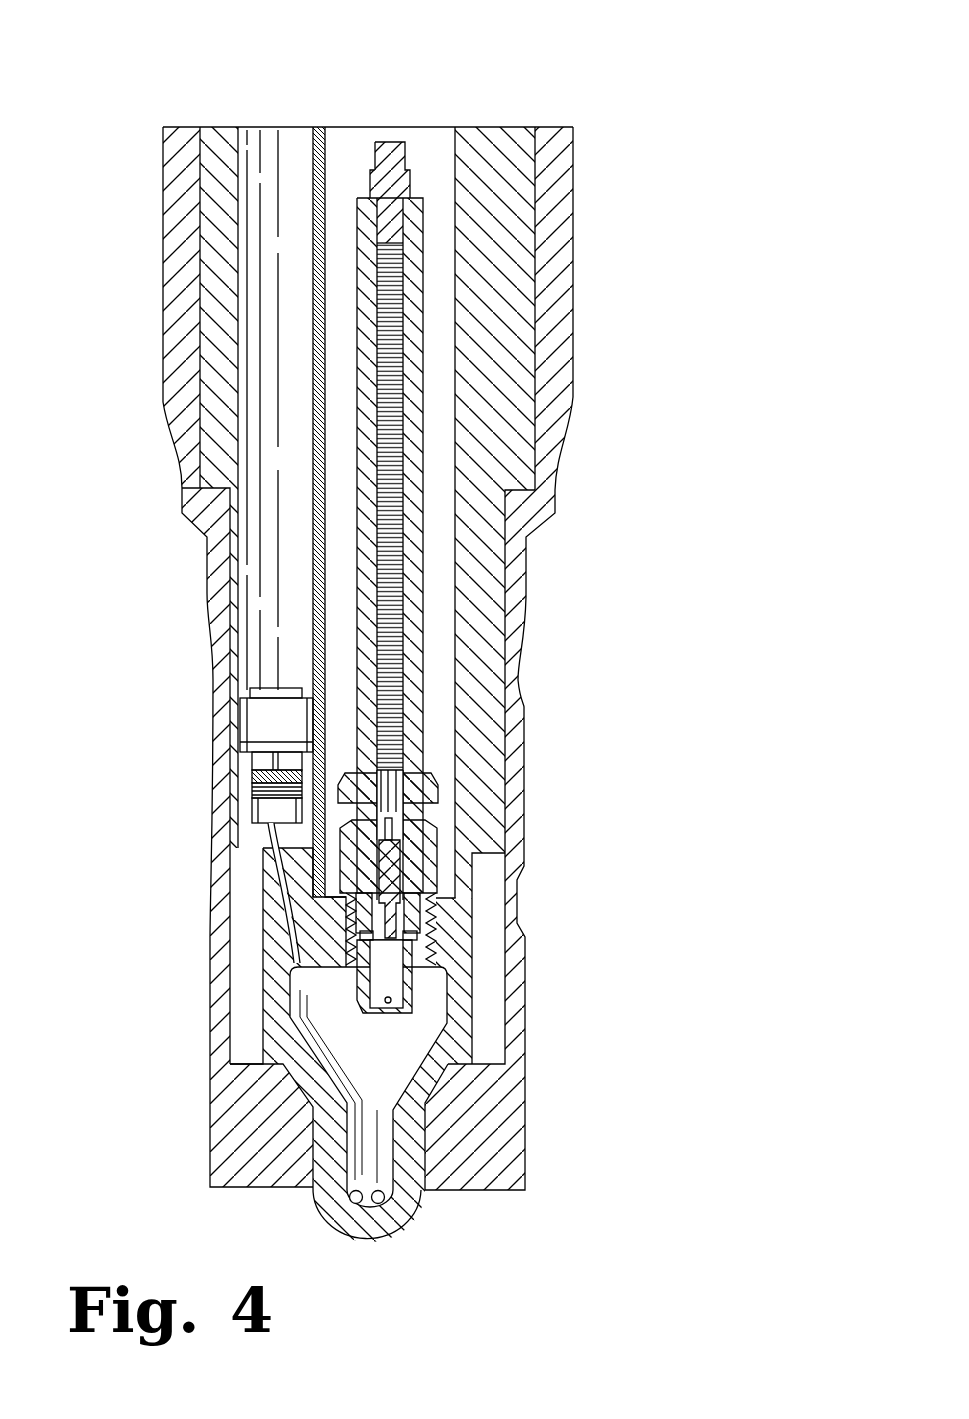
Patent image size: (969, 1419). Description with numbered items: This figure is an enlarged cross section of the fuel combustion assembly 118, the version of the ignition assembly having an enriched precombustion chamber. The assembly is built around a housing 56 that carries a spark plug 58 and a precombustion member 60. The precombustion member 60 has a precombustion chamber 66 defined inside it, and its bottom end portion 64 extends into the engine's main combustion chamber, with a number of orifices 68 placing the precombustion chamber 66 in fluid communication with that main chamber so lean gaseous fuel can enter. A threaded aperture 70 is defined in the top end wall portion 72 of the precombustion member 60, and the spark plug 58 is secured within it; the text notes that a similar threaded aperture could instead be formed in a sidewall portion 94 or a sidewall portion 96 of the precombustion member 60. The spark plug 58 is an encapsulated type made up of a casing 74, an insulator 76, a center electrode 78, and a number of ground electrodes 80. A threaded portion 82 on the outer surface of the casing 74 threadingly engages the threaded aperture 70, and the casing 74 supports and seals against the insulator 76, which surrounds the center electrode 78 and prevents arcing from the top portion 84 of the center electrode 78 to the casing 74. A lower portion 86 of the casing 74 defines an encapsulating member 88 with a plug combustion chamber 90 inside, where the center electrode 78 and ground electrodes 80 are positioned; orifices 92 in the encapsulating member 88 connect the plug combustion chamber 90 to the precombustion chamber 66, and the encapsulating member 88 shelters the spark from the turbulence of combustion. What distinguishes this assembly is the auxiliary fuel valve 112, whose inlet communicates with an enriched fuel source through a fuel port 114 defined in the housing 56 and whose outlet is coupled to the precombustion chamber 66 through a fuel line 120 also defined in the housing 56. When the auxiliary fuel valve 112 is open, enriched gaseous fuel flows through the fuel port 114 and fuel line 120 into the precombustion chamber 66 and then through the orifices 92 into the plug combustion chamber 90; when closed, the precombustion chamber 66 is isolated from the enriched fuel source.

The fuel combustion assembly 118 is at (699, 90).
The top portion of the center electrode 84 is at (389, 143).
The housing 56 is at (571, 179).
The center electrode 78 is at (388, 413).
The fuel port 114 is at (247, 592).
The spark plug 58 is at (440, 648).
The auxiliary fuel valve 112 is at (268, 720).
The insulator 76 is at (412, 735).
The fuel line 120 is at (278, 852).
The casing 74 is at (443, 845).
The top end wall portion 72 is at (292, 870).
The threaded portion 82 is at (337, 898).
The ground electrodes 80 is at (435, 925).
The threaded aperture 70 is at (340, 925).
The plug combustion chamber 90 is at (428, 945).
The encapsulating member 88 is at (300, 958).
The lower portion of the casing 86 is at (462, 983).
The orifices 92 is at (383, 1013).
The precombustion member 60 is at (451, 1050).
The sidewall portion 94 is at (427, 1070).
The sidewall portion 96 is at (293, 1068).
The precombustion chamber 66 is at (325, 1100).
The bottom end portion 64 is at (368, 1223).
The orifices 68 is at (395, 1222).